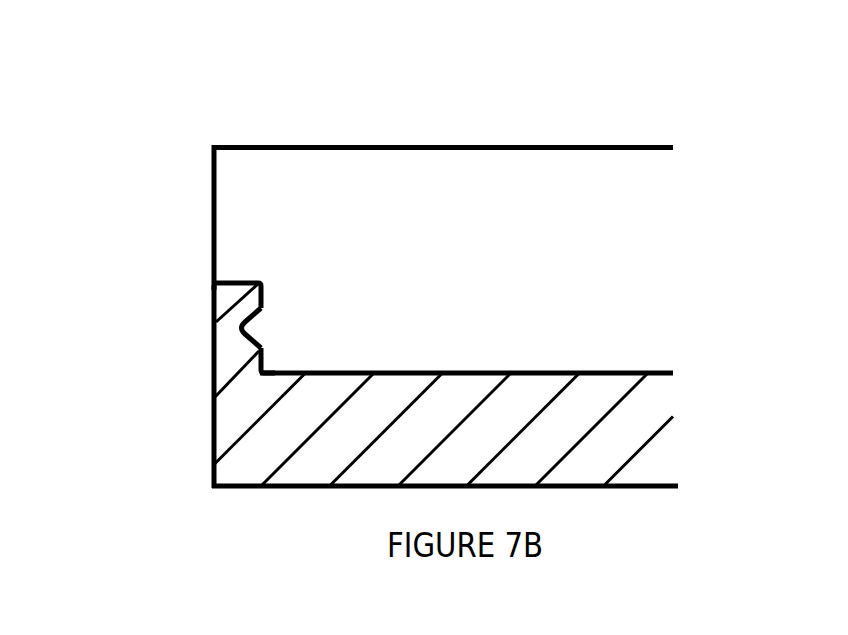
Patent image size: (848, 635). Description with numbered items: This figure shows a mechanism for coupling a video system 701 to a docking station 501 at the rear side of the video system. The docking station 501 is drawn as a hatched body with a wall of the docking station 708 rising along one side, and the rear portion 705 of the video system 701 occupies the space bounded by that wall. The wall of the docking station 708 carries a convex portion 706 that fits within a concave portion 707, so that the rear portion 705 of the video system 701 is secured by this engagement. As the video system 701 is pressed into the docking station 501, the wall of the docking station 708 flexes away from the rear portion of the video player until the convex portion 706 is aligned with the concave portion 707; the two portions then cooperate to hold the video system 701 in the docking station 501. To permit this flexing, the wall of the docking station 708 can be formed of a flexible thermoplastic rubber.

The video system 701 is at (242, 146).
The rear portion 705 is at (640, 312).
The docking station 501 is at (603, 487).
The wall of the docking station 708 is at (220, 292).
The convex portion 706 is at (252, 328).
The concave portion 707 is at (253, 348).